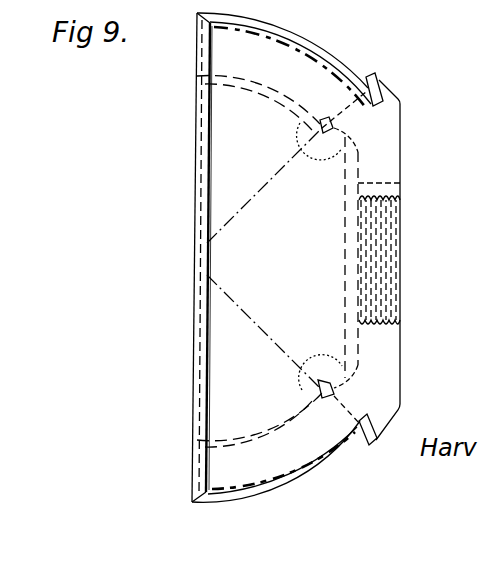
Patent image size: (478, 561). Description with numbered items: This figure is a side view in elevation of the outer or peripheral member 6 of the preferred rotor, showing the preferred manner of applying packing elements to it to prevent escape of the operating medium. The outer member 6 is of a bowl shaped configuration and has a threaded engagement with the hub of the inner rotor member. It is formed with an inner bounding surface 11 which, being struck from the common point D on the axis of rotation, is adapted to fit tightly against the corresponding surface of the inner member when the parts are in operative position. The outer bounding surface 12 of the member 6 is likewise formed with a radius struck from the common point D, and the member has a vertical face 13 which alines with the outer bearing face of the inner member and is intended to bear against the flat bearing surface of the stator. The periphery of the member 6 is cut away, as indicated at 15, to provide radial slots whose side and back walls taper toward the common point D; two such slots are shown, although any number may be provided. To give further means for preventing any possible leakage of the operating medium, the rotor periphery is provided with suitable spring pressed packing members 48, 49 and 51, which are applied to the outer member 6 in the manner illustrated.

The outer or peripheral member 6 is at (402, 167).
The inner bounding surface 11 is at (323, 157).
The outer bounding surface 12 is at (382, 85).
The vertical face 13 is at (193, 307).
The radial slot 15 is at (352, 66).
The spring pressed packing member 48 is at (200, 115).
The spring pressed packing member 49 is at (289, 34).
The spring pressed packing member 51 is at (272, 93).
The common point D is at (205, 250).